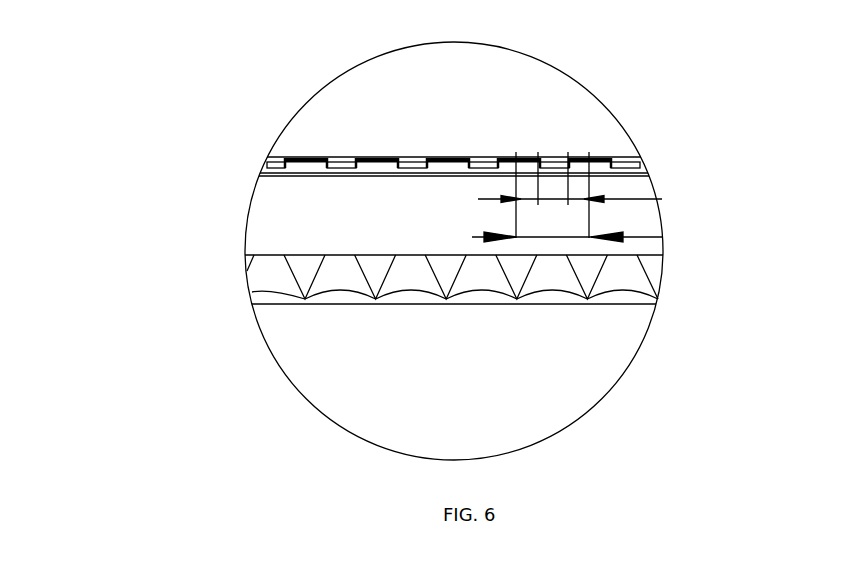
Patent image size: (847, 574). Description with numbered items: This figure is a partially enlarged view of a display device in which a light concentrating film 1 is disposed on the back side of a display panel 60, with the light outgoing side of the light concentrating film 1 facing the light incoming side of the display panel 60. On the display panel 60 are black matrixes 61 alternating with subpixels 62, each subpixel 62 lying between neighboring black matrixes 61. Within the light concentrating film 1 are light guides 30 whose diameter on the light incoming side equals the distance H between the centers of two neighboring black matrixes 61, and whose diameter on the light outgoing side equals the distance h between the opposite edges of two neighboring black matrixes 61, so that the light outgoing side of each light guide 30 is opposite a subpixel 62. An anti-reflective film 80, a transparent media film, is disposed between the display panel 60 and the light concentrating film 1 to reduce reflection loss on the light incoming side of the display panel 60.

The light concentrating film 1 is at (225, 281).
The light guide 30 is at (553, 274).
The display panel 60 is at (446, 97).
The black matrix 61 is at (517, 162).
The subpixel 62 is at (483, 162).
The anti-reflective film 80 is at (277, 203).